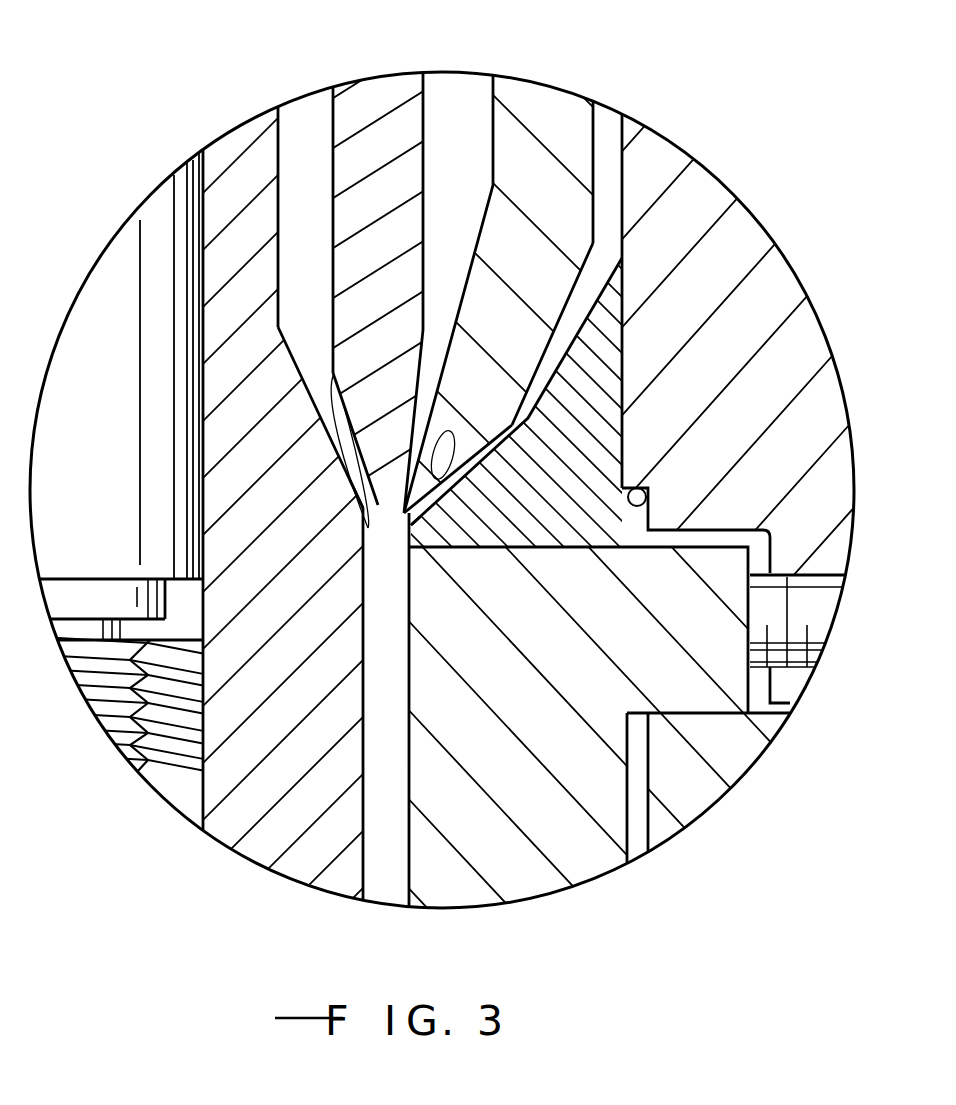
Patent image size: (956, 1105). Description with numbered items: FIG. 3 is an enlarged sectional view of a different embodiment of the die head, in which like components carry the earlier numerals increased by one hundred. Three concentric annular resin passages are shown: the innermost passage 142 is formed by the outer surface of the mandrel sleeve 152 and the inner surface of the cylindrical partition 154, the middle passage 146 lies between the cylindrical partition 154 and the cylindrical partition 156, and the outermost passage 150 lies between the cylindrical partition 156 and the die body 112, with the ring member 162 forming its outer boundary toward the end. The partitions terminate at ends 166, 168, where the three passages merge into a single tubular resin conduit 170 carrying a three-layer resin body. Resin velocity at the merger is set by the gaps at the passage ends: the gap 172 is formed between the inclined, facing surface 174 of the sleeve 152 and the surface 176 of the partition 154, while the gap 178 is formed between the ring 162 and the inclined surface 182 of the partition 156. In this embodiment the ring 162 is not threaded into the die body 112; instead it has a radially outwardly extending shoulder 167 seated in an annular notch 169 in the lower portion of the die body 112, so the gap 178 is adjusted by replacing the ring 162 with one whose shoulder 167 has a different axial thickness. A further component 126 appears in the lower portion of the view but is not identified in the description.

The die body 112 is at (657, 153).
The lower body block 126 is at (512, 875).
The passage 142 is at (305, 115).
The passage 146 is at (465, 90).
The passage 150 is at (607, 125).
The mandrel sleeve 152 is at (247, 808).
The cylindrical partition 154 is at (380, 97).
The cylindrical partition 156 is at (547, 113).
The ring member 162 is at (607, 337).
The end of cylindrical partition 166 is at (362, 540).
The shoulder 167 is at (637, 518).
The end of cylindrical partition 168 is at (401, 515).
The annular notch 169 is at (648, 482).
The tubular resin conduit 170 is at (395, 693).
The gap 172 is at (447, 337).
The surface of sleeve 174 is at (338, 499).
The surface of cylindrical partition 176 is at (410, 390).
The gap 178 is at (512, 407).
The surface of cylindrical partition 182 is at (508, 394).